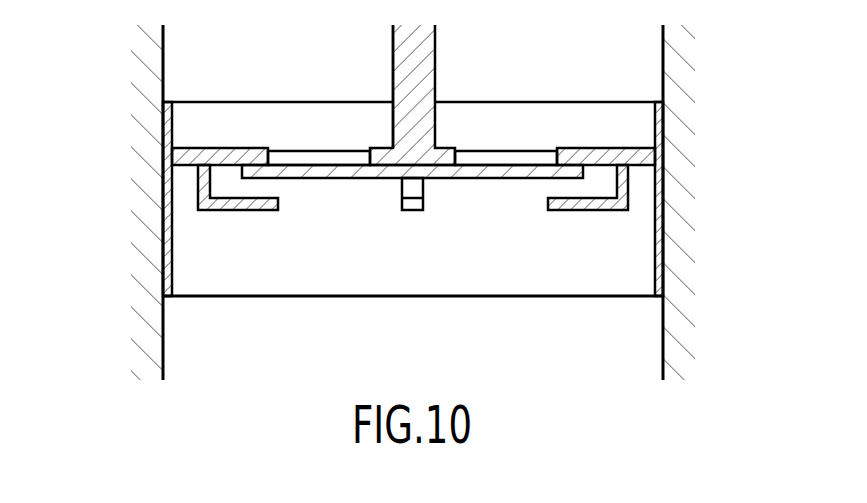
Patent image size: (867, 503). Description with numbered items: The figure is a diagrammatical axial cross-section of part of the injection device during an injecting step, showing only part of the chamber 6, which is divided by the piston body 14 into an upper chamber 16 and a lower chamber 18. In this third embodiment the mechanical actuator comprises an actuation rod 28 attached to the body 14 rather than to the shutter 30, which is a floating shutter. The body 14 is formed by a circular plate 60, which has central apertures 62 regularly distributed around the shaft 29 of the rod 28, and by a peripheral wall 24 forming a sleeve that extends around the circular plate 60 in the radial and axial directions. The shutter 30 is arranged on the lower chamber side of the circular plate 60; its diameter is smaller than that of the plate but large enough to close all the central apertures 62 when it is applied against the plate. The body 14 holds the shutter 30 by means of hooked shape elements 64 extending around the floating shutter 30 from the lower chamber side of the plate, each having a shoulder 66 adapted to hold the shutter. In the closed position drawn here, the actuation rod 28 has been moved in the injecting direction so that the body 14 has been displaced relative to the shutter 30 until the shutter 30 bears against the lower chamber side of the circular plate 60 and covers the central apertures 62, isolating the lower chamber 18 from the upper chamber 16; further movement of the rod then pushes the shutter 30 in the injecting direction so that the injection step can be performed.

The chamber 6 is at (640, 67).
The body 14 is at (167, 138).
The upper chamber 16 is at (193, 52).
The lower chamber 18 is at (212, 338).
The peripheral wall 24 is at (663, 238).
The actuation rod 28 is at (435, 48).
The shaft 29 is at (395, 51).
The shutter 30 is at (320, 168).
The circular plate 60 is at (621, 148).
The central aperture 62 is at (287, 158).
The hooked shape element 64 is at (405, 186).
The shoulder 66 is at (245, 212).